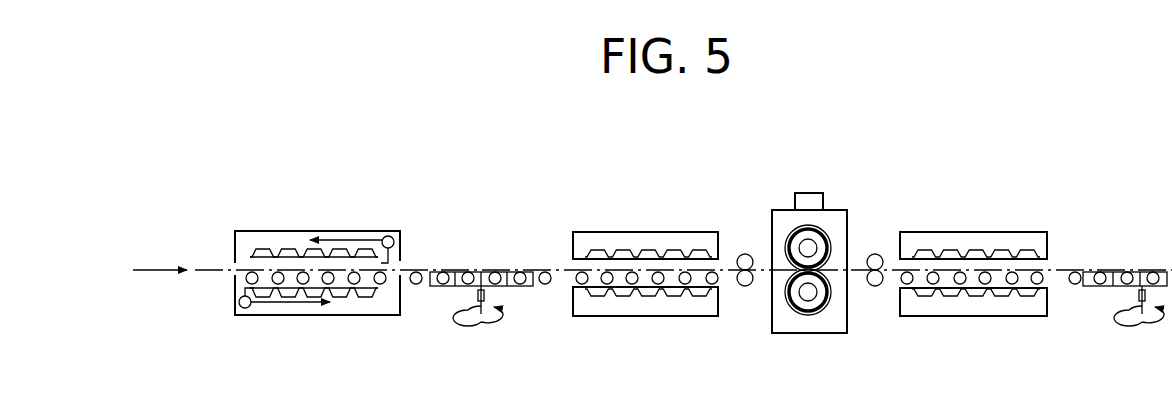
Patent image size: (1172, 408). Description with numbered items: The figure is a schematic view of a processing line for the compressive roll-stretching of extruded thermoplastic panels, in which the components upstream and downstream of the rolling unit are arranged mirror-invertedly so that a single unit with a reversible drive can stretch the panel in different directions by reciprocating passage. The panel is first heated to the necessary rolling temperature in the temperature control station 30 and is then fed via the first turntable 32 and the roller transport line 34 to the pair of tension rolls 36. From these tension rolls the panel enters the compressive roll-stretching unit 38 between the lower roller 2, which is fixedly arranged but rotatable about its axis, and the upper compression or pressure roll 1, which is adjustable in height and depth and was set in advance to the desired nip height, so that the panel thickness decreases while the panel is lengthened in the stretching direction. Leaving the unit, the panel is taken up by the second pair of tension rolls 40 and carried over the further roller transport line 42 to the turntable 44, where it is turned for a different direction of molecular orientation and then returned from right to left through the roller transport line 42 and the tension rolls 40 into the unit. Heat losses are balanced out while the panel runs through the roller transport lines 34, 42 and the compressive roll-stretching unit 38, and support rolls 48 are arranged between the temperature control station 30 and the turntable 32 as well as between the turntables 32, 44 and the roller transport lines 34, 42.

The upper compression roll 1 is at (818, 240).
The lower roller 2 is at (826, 307).
The temperature control station 30 is at (275, 233).
The first turntable 32 is at (481, 272).
The roller transport line 34 is at (620, 233).
The pair of tension rolls 36 is at (744, 254).
The compressive roll-stretching unit 38 is at (786, 218).
The second pair of tension rolls 40 is at (875, 254).
The further roller transport line 42 is at (1010, 233).
The turntable 44 is at (1112, 272).
The support rolls 48 is at (417, 284).